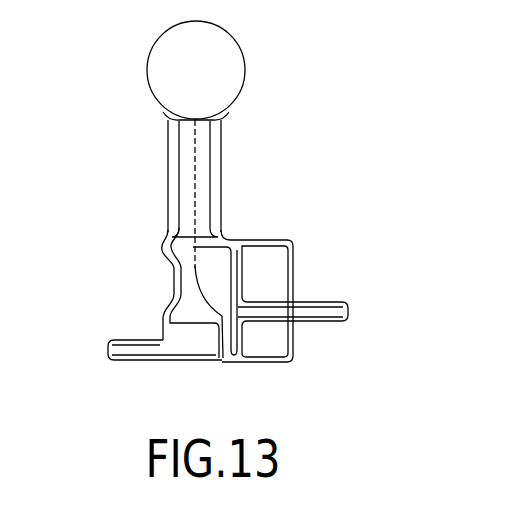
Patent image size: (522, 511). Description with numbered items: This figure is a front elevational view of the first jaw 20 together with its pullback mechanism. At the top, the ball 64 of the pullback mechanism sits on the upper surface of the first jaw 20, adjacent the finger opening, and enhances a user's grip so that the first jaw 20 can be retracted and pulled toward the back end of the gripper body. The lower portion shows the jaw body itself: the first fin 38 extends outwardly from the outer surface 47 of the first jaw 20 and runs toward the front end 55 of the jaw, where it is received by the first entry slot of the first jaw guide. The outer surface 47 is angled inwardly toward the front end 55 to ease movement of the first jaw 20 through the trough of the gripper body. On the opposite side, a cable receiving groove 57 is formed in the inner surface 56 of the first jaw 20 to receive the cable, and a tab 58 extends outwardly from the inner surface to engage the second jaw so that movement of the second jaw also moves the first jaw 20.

The ball 64 is at (183, 86).
The first jaw 20 is at (260, 168).
The inner surface 56 is at (162, 249).
The front end 55 is at (190, 302).
The cable receiving groove 57 is at (170, 293).
The tab 58 is at (108, 350).
The outer surface 47 is at (295, 342).
The first fin 38 is at (333, 300).